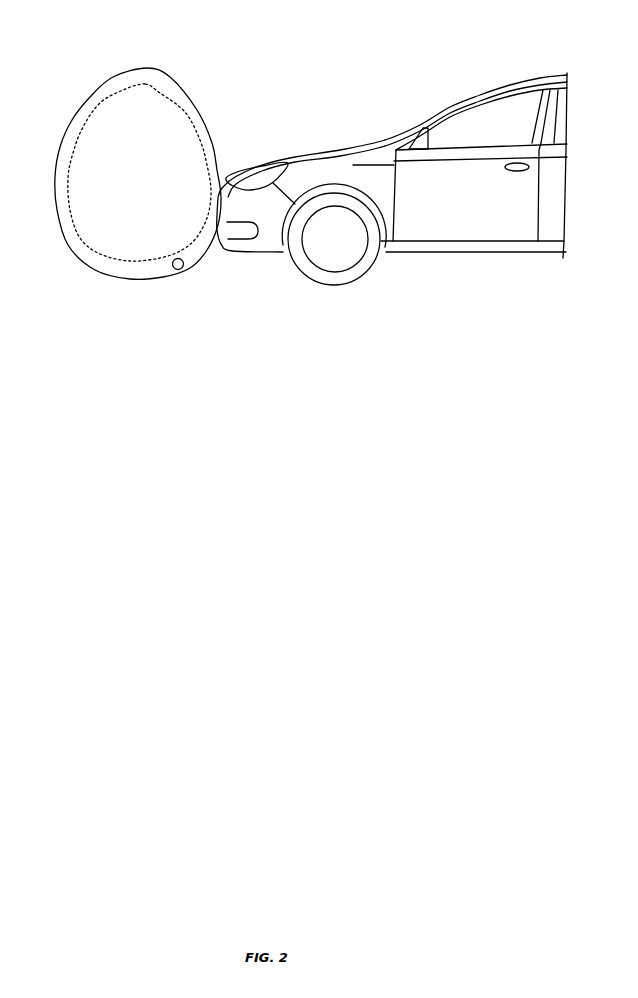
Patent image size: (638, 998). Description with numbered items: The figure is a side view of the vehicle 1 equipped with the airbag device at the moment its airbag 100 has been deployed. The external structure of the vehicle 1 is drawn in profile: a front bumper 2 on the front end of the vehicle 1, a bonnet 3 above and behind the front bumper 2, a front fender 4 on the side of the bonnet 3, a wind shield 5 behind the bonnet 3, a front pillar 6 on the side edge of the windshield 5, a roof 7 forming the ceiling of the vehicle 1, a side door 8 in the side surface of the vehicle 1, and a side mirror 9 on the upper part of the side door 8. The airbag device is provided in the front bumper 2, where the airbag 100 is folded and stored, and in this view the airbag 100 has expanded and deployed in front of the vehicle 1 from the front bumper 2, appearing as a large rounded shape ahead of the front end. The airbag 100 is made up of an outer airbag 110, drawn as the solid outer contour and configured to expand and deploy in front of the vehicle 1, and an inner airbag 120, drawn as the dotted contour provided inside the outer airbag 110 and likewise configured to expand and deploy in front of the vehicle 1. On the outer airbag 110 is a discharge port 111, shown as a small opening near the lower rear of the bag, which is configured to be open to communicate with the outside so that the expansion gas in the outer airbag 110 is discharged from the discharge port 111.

The vehicle 1 is at (323, 64).
The front bumper 2 is at (265, 222).
The bonnet 3 is at (316, 152).
The front fender 4 is at (327, 166).
The wind shield 5 is at (463, 89).
The front pillar 6 is at (488, 85).
The roof 7 is at (541, 74).
The side door 8 is at (466, 217).
The side mirror 9 is at (417, 129).
The airbag 100 is at (76, 70).
The outer airbag 110 is at (190, 93).
The discharge port 111 is at (180, 271).
The inner airbag 120 is at (194, 118).